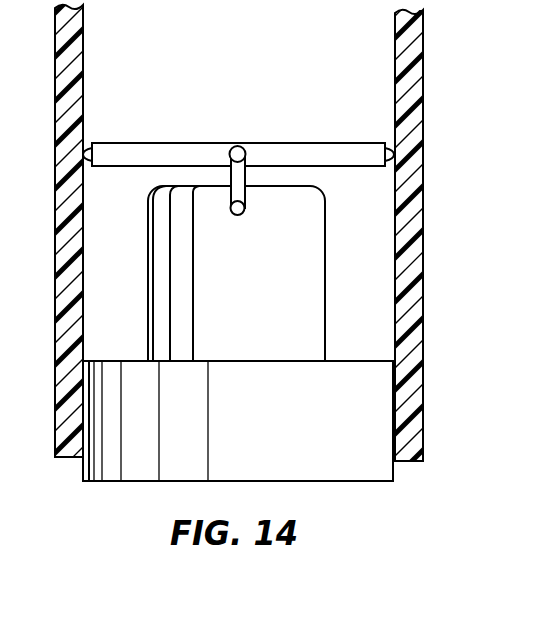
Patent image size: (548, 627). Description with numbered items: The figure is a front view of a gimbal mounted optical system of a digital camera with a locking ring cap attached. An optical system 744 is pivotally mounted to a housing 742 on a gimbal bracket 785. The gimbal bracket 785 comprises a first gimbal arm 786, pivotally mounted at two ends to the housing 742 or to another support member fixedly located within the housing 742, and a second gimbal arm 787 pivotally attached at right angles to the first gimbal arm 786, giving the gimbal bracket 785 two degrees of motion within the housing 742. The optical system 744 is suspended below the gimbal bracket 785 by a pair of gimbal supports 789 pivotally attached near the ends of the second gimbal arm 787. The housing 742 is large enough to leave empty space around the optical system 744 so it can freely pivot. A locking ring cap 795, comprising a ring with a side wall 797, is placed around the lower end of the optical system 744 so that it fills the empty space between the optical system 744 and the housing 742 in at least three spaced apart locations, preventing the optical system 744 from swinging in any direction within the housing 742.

The housing 742 is at (83, 91).
The optical system 744 is at (326, 265).
The gimbal bracket 785 is at (322, 138).
The first gimbal arm 786 is at (355, 168).
The second gimbal arm 787 is at (245, 159).
The gimbal supports 789 is at (247, 211).
The locking ring cap 795 is at (379, 483).
The side wall 797 is at (298, 436).